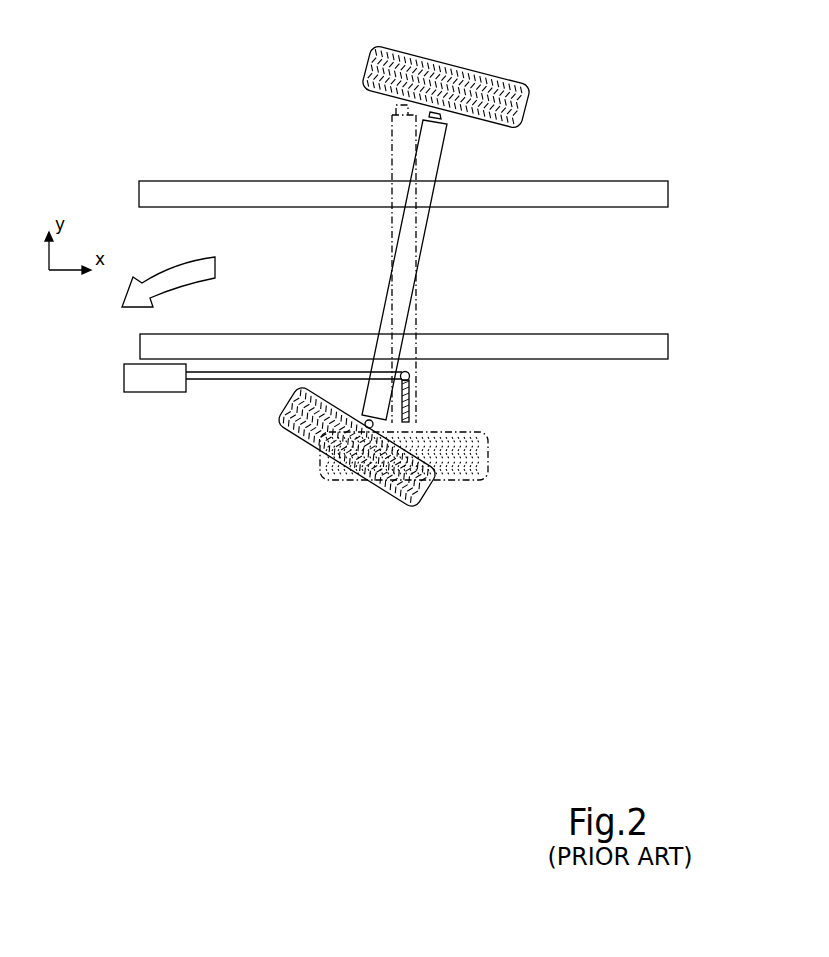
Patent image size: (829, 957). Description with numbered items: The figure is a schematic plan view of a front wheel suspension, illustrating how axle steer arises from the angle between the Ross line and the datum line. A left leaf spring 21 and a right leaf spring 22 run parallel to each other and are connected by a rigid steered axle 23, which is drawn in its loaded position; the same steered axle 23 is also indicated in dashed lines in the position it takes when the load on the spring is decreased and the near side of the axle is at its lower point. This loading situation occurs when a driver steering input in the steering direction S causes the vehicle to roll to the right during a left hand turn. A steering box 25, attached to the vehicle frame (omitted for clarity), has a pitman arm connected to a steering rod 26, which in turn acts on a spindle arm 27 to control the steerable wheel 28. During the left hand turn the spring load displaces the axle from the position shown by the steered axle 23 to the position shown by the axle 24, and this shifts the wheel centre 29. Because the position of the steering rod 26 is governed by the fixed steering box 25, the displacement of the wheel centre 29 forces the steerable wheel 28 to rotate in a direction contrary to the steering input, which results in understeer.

The steering direction S is at (183, 265).
The left leaf spring 21 is at (615, 348).
The right leaf spring 22 is at (605, 193).
The steered axle 23 is at (410, 322).
The axle 24 is at (420, 225).
The steering box 25 is at (150, 382).
The steering rod 26 is at (225, 380).
The spindle arm 27 is at (412, 397).
The steerable wheel 28 is at (313, 413).
The wheel centre 29 is at (357, 480).